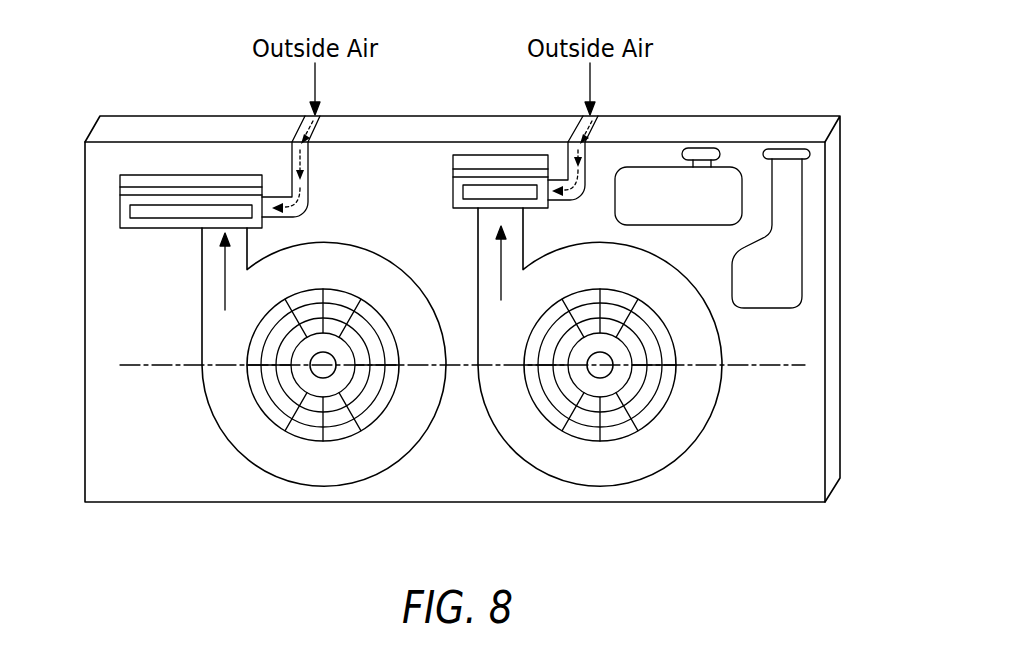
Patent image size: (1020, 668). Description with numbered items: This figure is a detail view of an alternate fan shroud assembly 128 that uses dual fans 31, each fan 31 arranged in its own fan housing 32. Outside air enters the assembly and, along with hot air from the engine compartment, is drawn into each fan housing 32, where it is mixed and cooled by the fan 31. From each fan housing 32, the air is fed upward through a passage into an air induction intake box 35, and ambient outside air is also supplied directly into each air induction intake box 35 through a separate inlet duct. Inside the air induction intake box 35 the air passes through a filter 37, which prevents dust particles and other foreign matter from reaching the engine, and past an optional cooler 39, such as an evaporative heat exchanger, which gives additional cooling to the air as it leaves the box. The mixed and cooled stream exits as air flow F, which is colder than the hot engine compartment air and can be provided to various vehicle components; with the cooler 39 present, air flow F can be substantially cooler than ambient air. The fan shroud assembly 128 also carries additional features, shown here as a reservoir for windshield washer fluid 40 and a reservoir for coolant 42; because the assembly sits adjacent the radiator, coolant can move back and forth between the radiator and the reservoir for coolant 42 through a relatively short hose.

The alternate fan shroud assembly 128 is at (840, 335).
The air induction intake box 35 is at (200, 175).
The filter 37 is at (120, 192).
The cooler 39 is at (130, 214).
The fan housing 32 is at (240, 455).
The fan 31 is at (325, 440).
The reservoir for coolant 42 is at (665, 167).
The reservoir for windshield washer fluid 40 is at (800, 263).
The air flow F is at (225, 278).